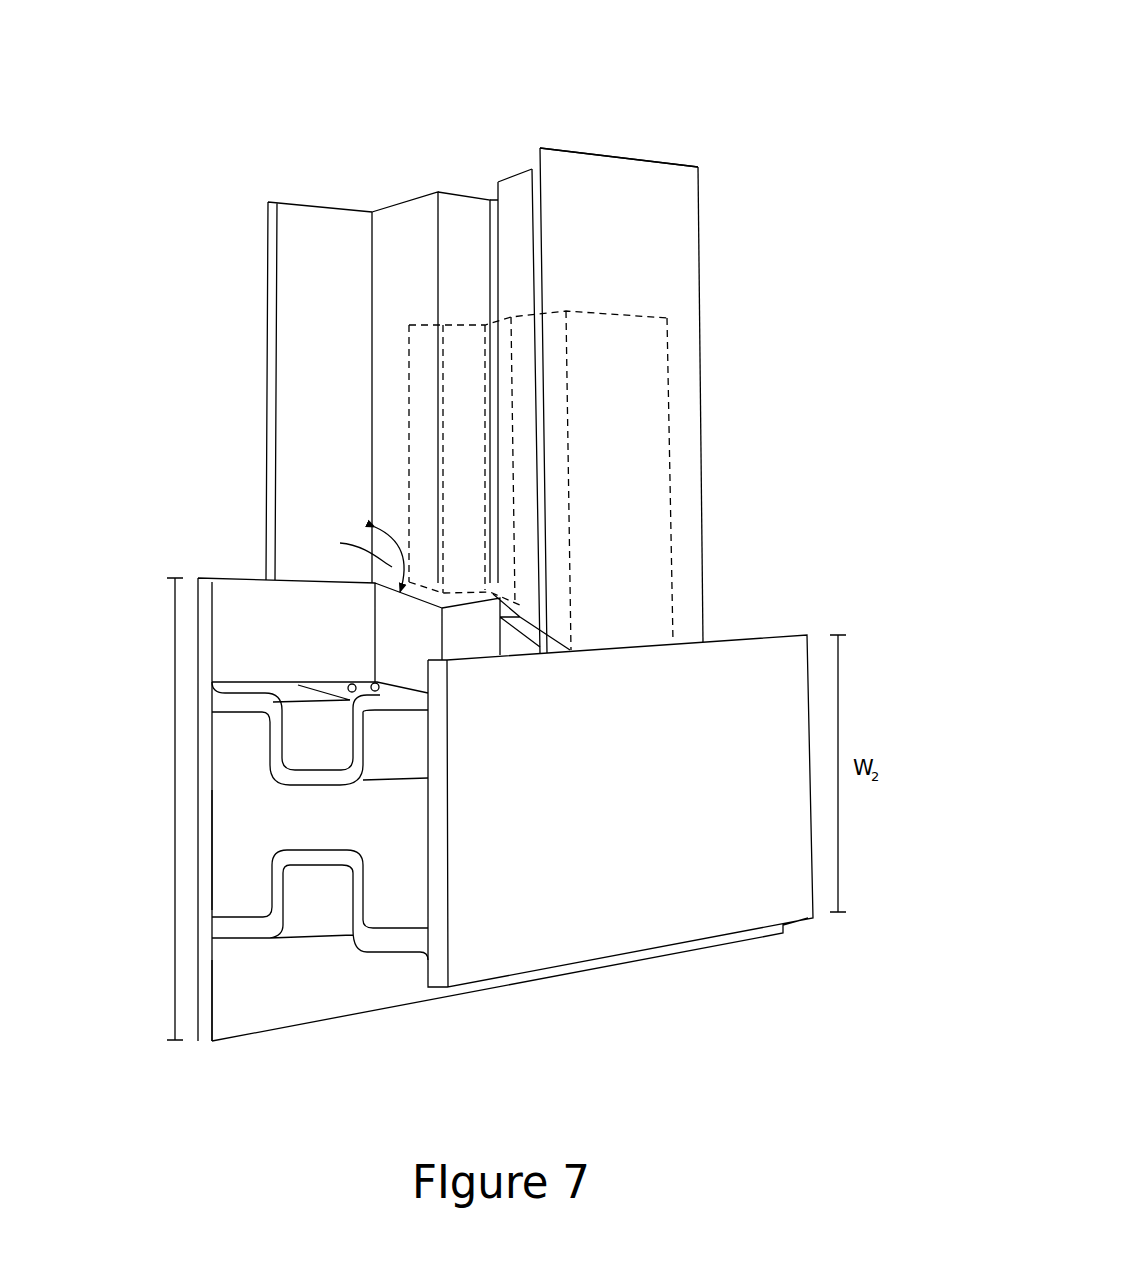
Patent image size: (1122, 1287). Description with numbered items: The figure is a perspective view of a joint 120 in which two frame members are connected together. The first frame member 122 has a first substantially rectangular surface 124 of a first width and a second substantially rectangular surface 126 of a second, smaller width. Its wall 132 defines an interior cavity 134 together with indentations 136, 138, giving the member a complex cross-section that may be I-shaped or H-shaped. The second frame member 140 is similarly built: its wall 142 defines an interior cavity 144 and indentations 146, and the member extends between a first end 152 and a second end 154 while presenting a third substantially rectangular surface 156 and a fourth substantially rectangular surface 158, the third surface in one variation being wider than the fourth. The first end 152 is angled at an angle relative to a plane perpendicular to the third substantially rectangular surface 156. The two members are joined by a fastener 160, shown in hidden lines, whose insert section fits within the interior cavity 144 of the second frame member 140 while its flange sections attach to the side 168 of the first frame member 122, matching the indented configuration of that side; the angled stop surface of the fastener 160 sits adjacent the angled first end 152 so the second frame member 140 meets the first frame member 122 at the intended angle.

The joint 120 is at (722, 107).
The first frame member 122 is at (286, 755).
The first substantially rectangular surface 124 is at (195, 772).
The second substantially rectangular surface 126 is at (772, 773).
The wall 132 is at (252, 928).
The interior cavity 134 is at (253, 783).
The indentation 136 is at (308, 760).
The indentation 138 is at (310, 867).
The second frame member 140 is at (702, 354).
The wall 142 is at (423, 205).
The interior cavity 144 is at (447, 290).
The indentations 146 is at (492, 200).
The first end 152 is at (697, 635).
The second end 154 is at (588, 160).
The third substantially rectangular surface 156 is at (267, 273).
The fourth substantially rectangular surface 158 is at (678, 287).
The fastener 160 is at (668, 414).
The side 168 is at (272, 680).